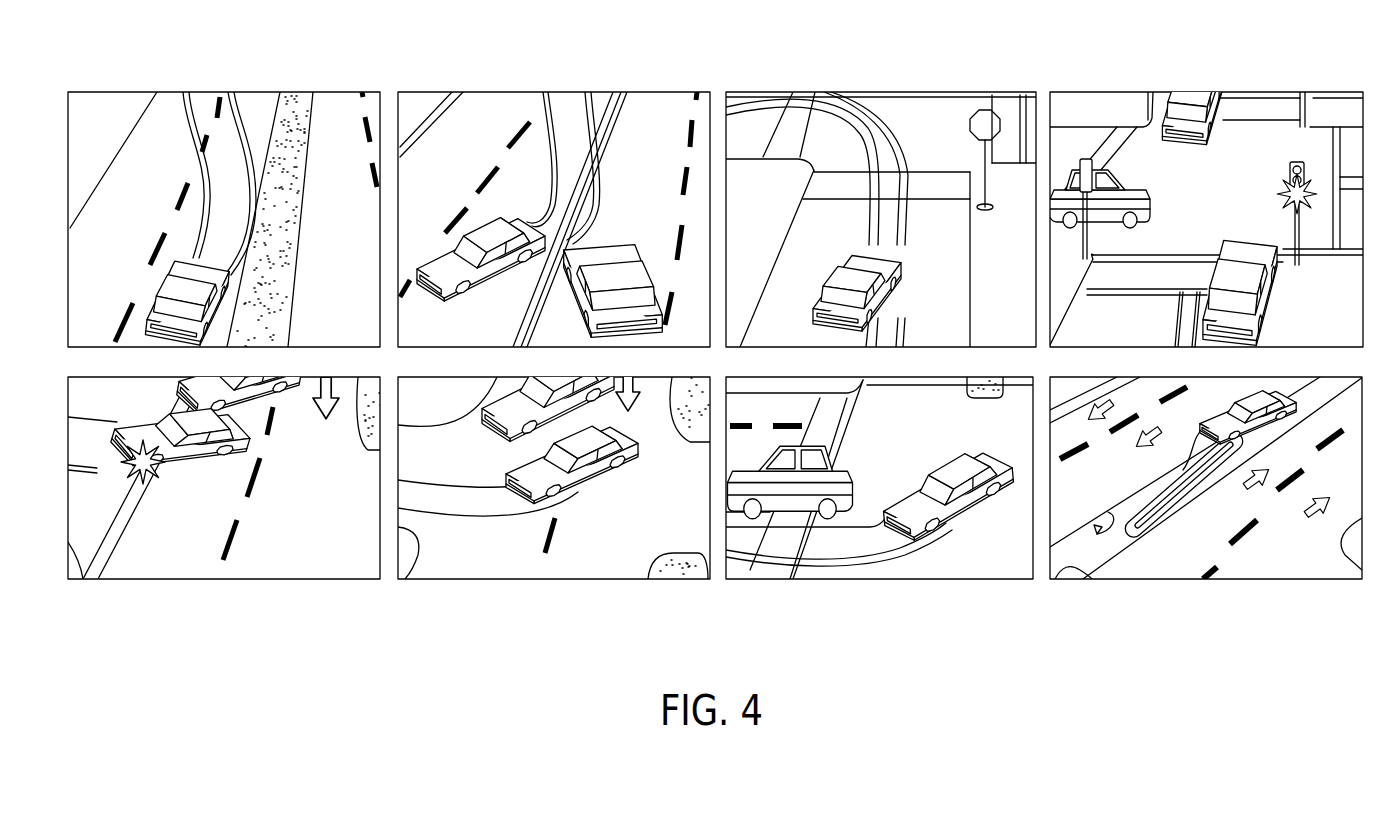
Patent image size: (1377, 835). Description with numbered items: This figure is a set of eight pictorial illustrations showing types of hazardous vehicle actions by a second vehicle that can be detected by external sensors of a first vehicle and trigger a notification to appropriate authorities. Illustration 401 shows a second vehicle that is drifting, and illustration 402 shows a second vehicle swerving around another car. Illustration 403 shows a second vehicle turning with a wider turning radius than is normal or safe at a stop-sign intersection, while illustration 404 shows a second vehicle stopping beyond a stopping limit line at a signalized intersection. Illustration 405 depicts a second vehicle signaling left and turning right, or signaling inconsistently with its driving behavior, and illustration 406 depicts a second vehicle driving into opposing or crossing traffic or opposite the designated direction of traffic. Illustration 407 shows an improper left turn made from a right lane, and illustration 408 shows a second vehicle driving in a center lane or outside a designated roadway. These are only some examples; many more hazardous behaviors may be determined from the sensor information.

The illustration 401 is at (135, 92).
The illustration 402 is at (562, 92).
The illustration 403 is at (882, 92).
The illustration 404 is at (1170, 92).
The illustration 405 is at (68, 580).
The illustration 406 is at (403, 580).
The illustration 407 is at (755, 580).
The illustration 408 is at (1060, 580).